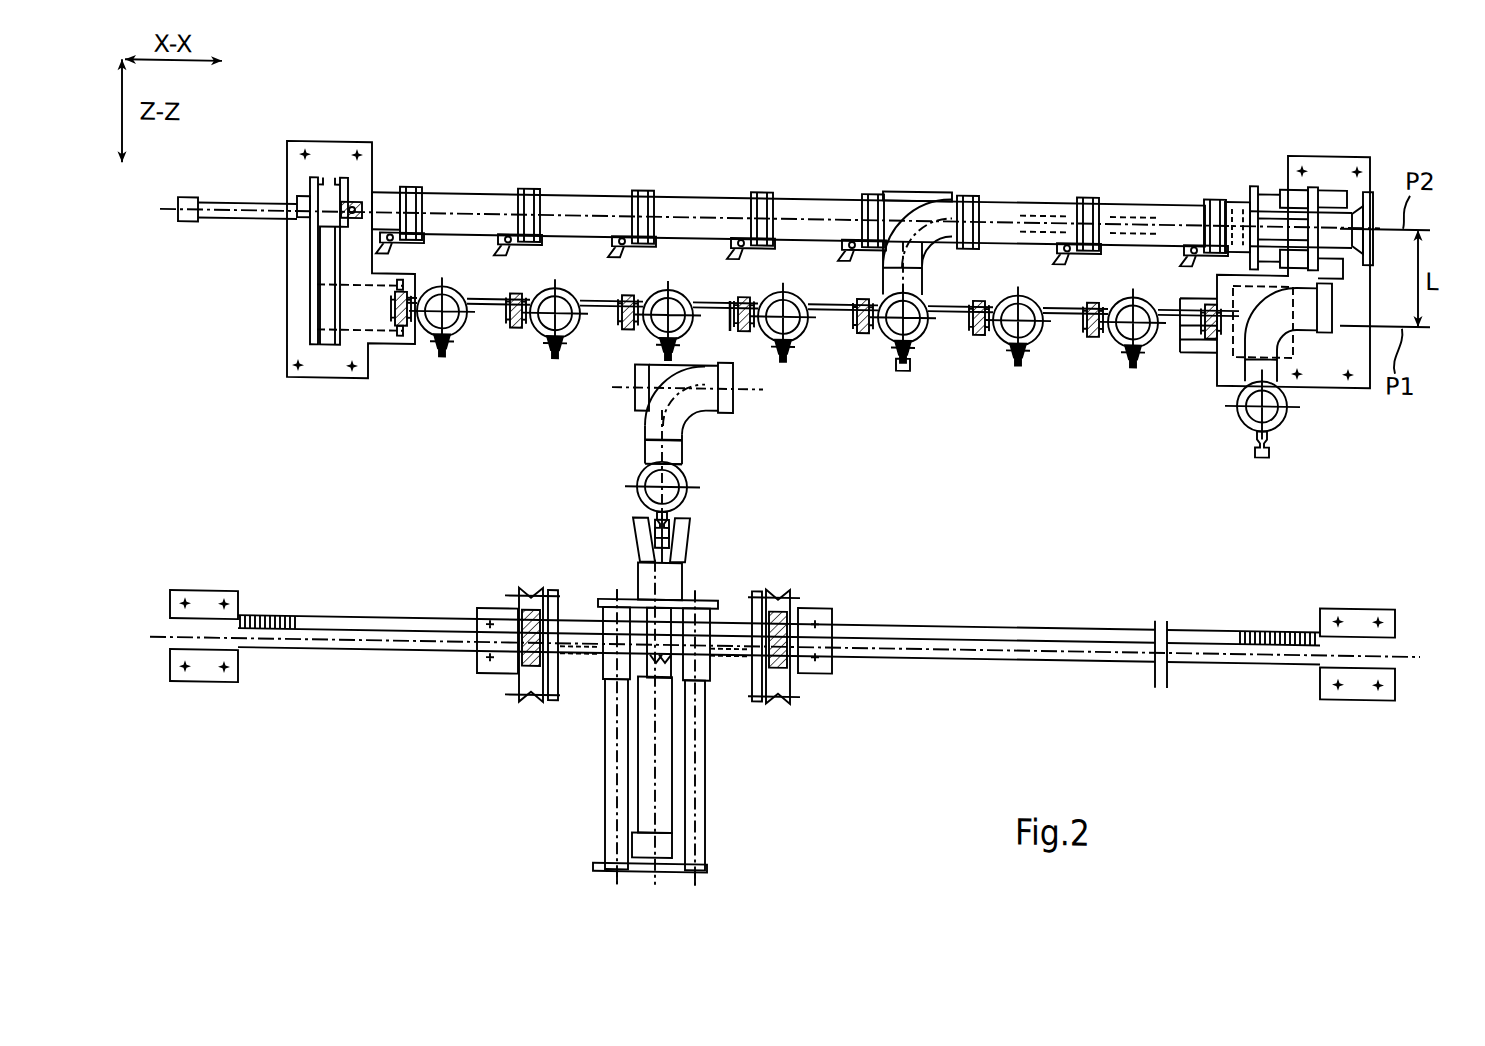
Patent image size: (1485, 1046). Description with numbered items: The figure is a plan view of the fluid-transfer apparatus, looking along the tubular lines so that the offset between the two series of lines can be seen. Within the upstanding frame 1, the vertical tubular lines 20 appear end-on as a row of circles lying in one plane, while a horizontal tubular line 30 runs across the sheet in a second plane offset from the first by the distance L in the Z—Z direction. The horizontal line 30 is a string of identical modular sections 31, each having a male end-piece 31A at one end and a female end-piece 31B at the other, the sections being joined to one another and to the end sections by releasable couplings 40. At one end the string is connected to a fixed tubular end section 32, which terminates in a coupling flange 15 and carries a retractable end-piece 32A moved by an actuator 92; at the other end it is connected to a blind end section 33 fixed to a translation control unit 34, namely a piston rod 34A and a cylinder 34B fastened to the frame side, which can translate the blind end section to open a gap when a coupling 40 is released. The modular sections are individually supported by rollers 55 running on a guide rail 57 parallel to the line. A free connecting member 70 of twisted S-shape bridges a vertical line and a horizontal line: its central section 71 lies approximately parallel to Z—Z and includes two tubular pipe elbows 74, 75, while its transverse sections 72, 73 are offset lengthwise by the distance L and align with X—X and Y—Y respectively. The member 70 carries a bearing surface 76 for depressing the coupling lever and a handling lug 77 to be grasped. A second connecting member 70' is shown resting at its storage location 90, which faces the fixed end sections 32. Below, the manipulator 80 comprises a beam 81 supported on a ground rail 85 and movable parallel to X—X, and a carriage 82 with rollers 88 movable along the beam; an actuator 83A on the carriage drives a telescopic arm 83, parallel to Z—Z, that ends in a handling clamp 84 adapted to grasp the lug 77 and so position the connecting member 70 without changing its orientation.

The frame 1 is at (327, 147).
The coupling flange 15 is at (1375, 190).
The vertical tubular line 20 is at (480, 340).
The horizontal tubular line 30 is at (818, 188).
The modular tubular section 31 is at (640, 192).
The male end-piece 31A is at (1133, 196).
The female end-piece 31B is at (1050, 197).
The fixed tubular end section 32 is at (1267, 188).
The retractable end-piece 32A is at (1242, 191).
The blind end section 33 is at (385, 200).
The translation control unit 34 is at (292, 186).
The piston rod 34A is at (345, 208).
The cylinder 34B is at (205, 233).
The coupling 40 is at (522, 258).
The roller 55 is at (1082, 333).
The guide rail 57 is at (1092, 340).
The connecting member 70 is at (718, 277).
The connecting member in storage 70' is at (1288, 370).
The central section 71 is at (683, 437).
The transverse section 72 is at (648, 417).
The transverse section 73 is at (690, 476).
The tubular pipe elbow 74 is at (702, 411).
The tubular pipe elbow 75 is at (638, 470).
The bearing surface 76 is at (730, 318).
The handling lug 77 is at (908, 364).
The manipulator 80 is at (803, 734).
The beam 81 is at (835, 607).
The carriage 82 is at (533, 592).
The telescopic arm 83 is at (705, 722).
The actuator 83A is at (668, 790).
The handling clamp 84 is at (690, 537).
The rail 85 is at (1068, 656).
The roller 88 is at (788, 588).
The storage location 90 is at (1328, 357).
The actuator 92 is at (1301, 190).